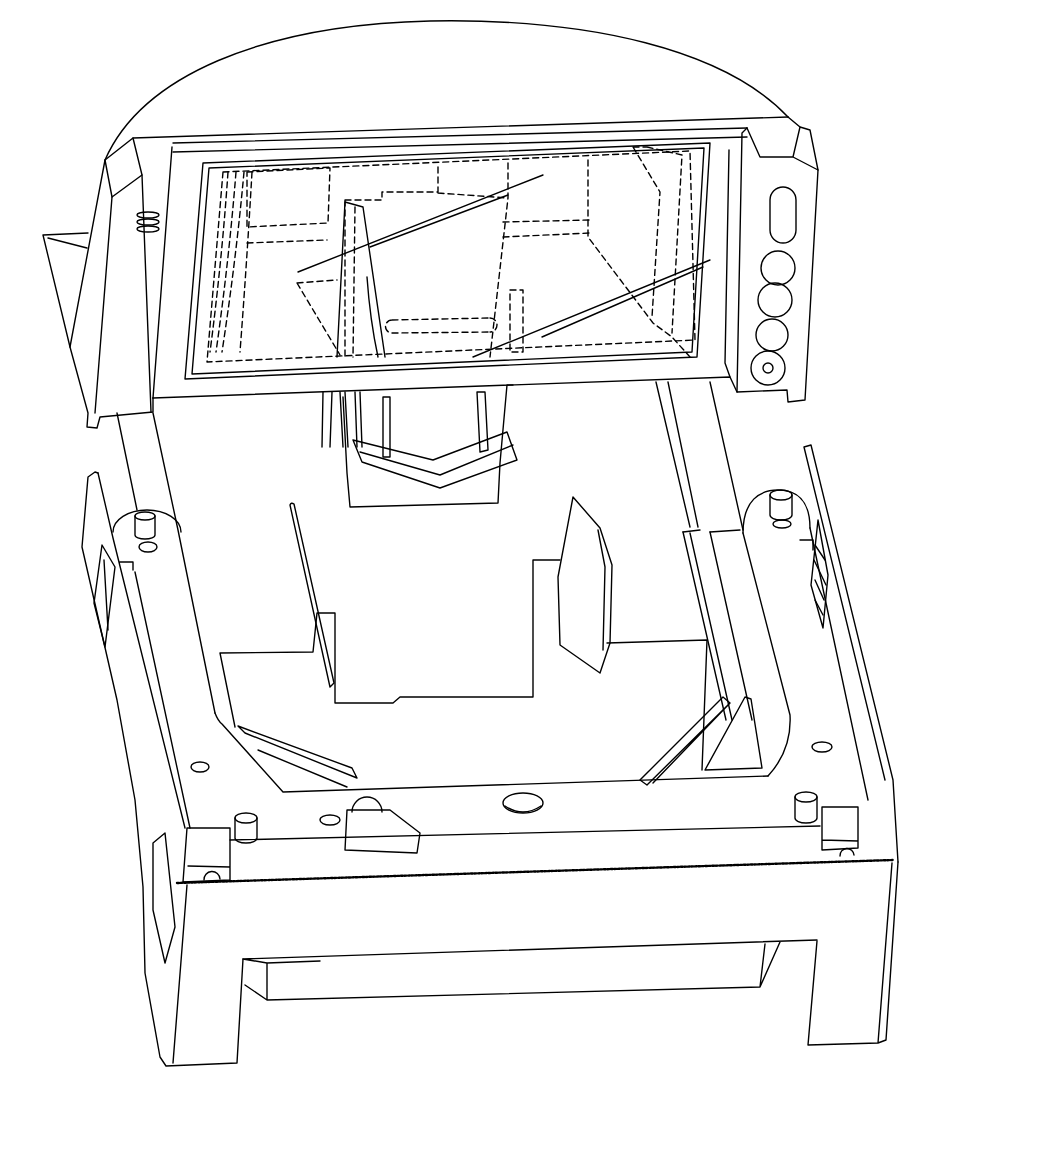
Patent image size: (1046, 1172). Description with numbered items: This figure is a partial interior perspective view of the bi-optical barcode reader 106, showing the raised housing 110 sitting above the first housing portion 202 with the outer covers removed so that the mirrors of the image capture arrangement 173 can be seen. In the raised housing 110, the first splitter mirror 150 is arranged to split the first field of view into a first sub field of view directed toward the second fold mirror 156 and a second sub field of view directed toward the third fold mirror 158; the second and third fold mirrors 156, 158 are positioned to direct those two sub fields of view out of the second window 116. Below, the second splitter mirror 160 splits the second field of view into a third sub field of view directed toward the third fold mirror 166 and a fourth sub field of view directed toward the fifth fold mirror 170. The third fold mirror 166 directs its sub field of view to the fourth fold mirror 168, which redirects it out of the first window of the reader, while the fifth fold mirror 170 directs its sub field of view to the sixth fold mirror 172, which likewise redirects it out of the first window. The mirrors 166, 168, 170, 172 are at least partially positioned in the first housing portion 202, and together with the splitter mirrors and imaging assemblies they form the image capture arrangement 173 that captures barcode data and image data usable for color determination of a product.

The barcode reader 106 is at (157, 62).
The raised housing 110 is at (643, 59).
The second window 116 is at (197, 363).
The first splitter mirror 150 is at (412, 173).
The second fold mirror 156 is at (227, 293).
The third fold mirror 158 is at (610, 257).
The second splitter mirror 160 is at (362, 473).
The third fold mirror 166 is at (300, 549).
The fourth fold mirror 168 is at (693, 723).
The fifth fold mirror 170 is at (583, 522).
The sixth fold mirror 172 is at (350, 770).
The image capture arrangement 173 is at (803, 302).
The first housing portion 202 is at (863, 957).